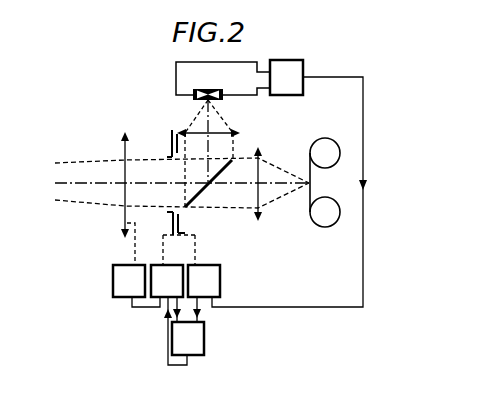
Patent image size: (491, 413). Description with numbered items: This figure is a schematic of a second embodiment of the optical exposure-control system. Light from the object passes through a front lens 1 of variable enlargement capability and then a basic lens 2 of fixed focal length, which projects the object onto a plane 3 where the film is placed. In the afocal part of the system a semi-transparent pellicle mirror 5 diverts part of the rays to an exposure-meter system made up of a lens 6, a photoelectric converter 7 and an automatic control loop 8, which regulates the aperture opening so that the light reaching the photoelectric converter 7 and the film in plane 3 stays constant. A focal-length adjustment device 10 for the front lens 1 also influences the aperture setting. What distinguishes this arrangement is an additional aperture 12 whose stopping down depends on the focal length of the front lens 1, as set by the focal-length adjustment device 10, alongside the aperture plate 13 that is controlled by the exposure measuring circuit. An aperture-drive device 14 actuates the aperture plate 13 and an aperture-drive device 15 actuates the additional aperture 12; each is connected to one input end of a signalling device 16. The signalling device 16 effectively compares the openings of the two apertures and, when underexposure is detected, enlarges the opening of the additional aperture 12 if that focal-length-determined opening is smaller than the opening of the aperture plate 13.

The front lens 1 is at (123, 149).
The basic lens 2 is at (260, 166).
The plane 3 is at (309, 203).
The pellicle mirror 5 is at (220, 172).
The lens 6 is at (222, 128).
The photoelectric converter 7 is at (202, 90).
The automatic control loop 8 is at (286, 77).
The focal-length adjustment device 10 is at (129, 281).
The additional aperture 12 is at (172, 215).
The aperture plate 13 is at (182, 217).
The aperture-drive device 14 is at (204, 281).
The aperture-drive device 15 is at (167, 281).
The signalling device 16 is at (188, 338).